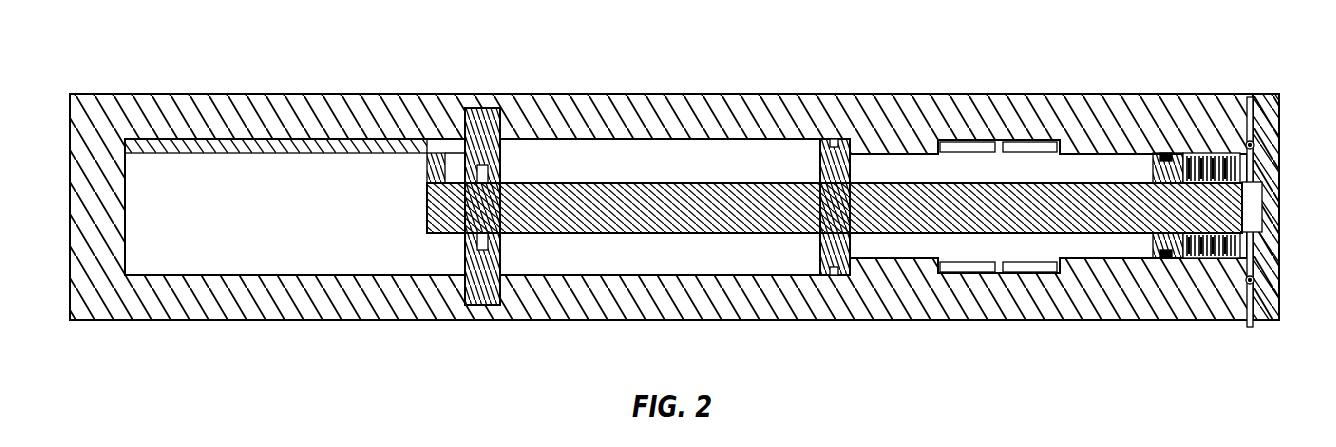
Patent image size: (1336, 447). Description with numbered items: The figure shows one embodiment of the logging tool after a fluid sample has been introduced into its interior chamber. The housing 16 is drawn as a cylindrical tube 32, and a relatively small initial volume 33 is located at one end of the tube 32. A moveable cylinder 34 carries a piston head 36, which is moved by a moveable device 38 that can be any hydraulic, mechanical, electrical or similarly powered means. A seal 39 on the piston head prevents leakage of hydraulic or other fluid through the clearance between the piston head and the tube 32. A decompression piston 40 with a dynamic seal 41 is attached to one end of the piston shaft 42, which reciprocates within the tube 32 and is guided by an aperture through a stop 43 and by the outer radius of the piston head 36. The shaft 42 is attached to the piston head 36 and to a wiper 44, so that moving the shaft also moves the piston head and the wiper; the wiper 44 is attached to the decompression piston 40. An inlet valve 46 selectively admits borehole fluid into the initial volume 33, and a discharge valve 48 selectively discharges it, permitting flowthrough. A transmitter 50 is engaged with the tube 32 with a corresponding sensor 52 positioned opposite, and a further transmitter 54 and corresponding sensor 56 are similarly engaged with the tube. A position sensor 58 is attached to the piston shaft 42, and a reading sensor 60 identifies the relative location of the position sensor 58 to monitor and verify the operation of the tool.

The housing 16 is at (1028, 80).
The cylindrical tube 32 is at (955, 140).
The initial volume 33 is at (1282, 223).
The moveable cylinder 34 is at (802, 158).
The piston head 36 is at (853, 142).
The moveable device 38 is at (273, 170).
The seal 39 is at (835, 268).
The decompression piston 40 is at (1168, 255).
The dynamic seal 41 is at (1178, 262).
The piston shaft 42 is at (610, 200).
The stop 43 is at (478, 300).
The wiper 44 is at (1203, 160).
The inlet valve 46 is at (1252, 280).
The discharge valve 48 is at (1250, 143).
The transmitter 50 is at (1030, 265).
The sensor 52 is at (1055, 145).
The transmitter 54 is at (967, 265).
The sensor 56 is at (950, 146).
The position sensor 58 is at (436, 168).
The reading sensor 60 is at (360, 150).